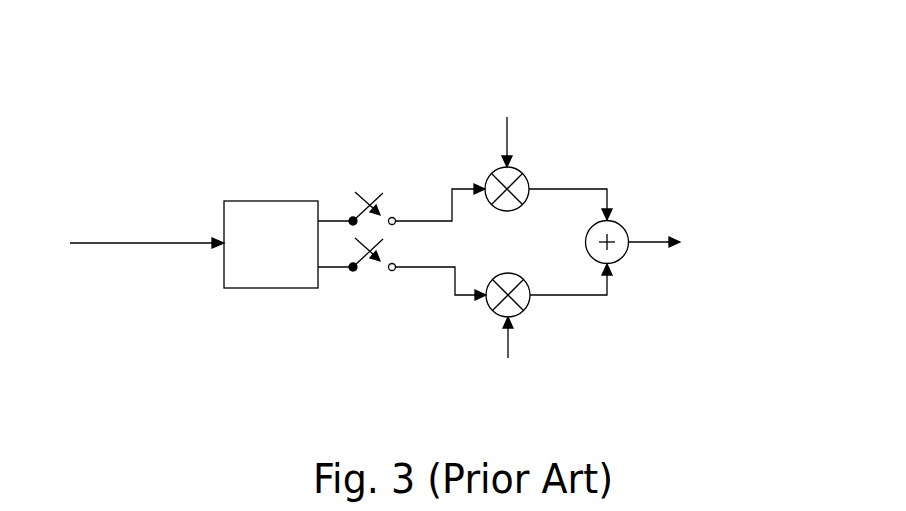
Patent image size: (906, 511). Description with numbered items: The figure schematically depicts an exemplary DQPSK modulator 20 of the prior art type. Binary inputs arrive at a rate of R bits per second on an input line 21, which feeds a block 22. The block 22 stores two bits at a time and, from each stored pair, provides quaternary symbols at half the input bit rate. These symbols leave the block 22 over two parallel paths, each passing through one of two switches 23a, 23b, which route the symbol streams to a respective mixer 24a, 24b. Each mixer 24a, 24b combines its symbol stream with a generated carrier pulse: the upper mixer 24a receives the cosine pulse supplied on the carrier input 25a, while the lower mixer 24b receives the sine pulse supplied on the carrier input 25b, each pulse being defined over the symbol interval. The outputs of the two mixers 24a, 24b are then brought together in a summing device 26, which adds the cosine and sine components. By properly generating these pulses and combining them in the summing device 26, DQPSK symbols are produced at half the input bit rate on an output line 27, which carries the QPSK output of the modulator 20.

The prior art QPSK modulator 20 is at (612, 38).
The input line 21 is at (160, 244).
The block 22 is at (249, 201).
The switch 23a is at (378, 197).
The switch 23b is at (366, 266).
The mixer 24a is at (526, 172).
The mixer 24b is at (528, 305).
The cosine carrier input 25a is at (506, 147).
The sine carrier input 25b is at (511, 336).
The summing device 26 is at (617, 224).
The output line 27 is at (656, 243).